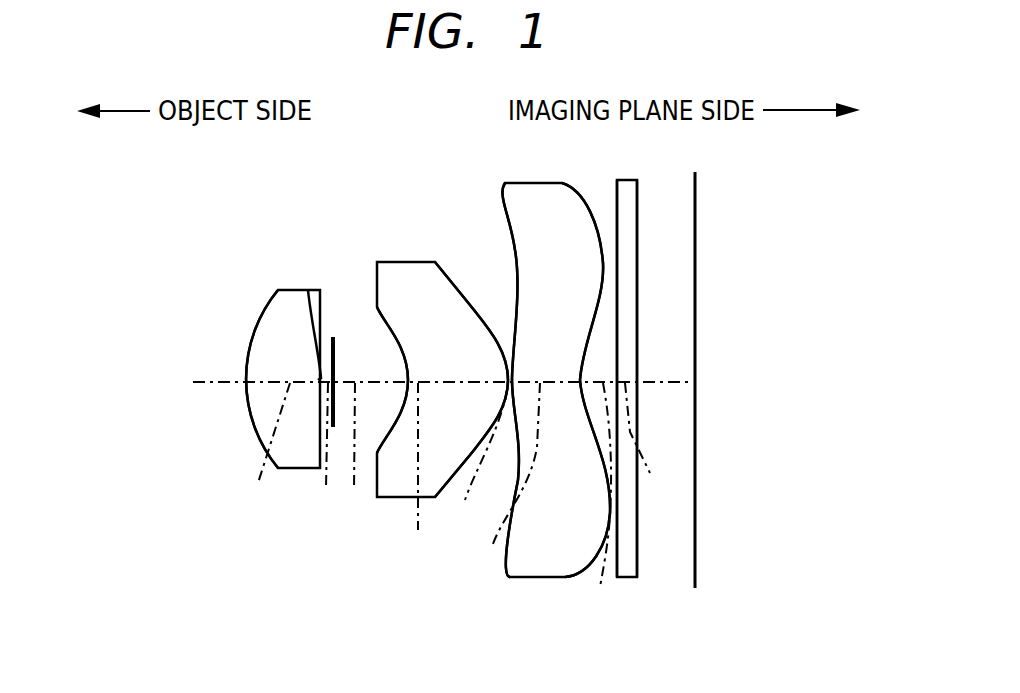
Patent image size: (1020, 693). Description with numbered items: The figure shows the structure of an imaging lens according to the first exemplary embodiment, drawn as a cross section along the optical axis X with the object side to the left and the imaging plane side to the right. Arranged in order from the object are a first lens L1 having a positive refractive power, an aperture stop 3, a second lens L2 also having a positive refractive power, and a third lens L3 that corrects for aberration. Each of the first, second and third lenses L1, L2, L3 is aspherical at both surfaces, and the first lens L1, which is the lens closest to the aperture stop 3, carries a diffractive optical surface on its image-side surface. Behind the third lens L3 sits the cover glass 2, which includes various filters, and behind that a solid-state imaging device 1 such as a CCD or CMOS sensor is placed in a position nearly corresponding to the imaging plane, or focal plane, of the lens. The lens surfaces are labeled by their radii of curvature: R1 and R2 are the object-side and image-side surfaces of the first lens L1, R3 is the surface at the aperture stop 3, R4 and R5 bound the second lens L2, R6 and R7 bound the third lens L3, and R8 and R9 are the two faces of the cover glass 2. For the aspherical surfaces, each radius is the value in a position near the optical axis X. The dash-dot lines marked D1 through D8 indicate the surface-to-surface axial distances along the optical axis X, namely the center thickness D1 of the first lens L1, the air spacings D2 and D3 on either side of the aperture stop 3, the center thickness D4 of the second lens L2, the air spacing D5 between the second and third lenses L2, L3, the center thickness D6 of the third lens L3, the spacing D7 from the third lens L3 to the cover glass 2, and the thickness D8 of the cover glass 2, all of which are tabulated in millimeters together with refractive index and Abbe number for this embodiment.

The solid-state imaging device 1 is at (693, 172).
The cover glass 2 is at (618, 180).
The aperture stop 3 is at (333, 335).
The first lens L1 is at (287, 296).
The second lens L2 is at (412, 267).
The third lens L3 is at (518, 192).
The radius of curvature of lens surface R1 is at (245, 375).
The radius of curvature of lens surface R2 is at (308, 290).
The radius of curvature of lens surface R3 is at (335, 340).
The radius of curvature of lens surface R4 is at (407, 377).
The radius of curvature of lens surface R5 is at (507, 360).
The radius of curvature of lens surface R6 is at (513, 370).
The radius of curvature of lens surface R7 is at (583, 370).
The radius of curvature of lens surface R8 is at (613, 195).
The radius of curvature of lens surface R9 is at (637, 222).
The lens surface-to-surface axial distance D1 is at (270, 449).
The lens surface-to-surface axial distance D2 is at (328, 454).
The lens surface-to-surface axial distance D3 is at (365, 454).
The lens surface-to-surface axial distance D4 is at (423, 476).
The lens surface-to-surface axial distance D5 is at (482, 462).
The lens surface-to-surface axial distance D6 is at (510, 482).
The lens surface-to-surface axial distance D7 is at (603, 505).
The lens surface-to-surface axial distance D8 is at (653, 447).
The optical axis X is at (196, 383).